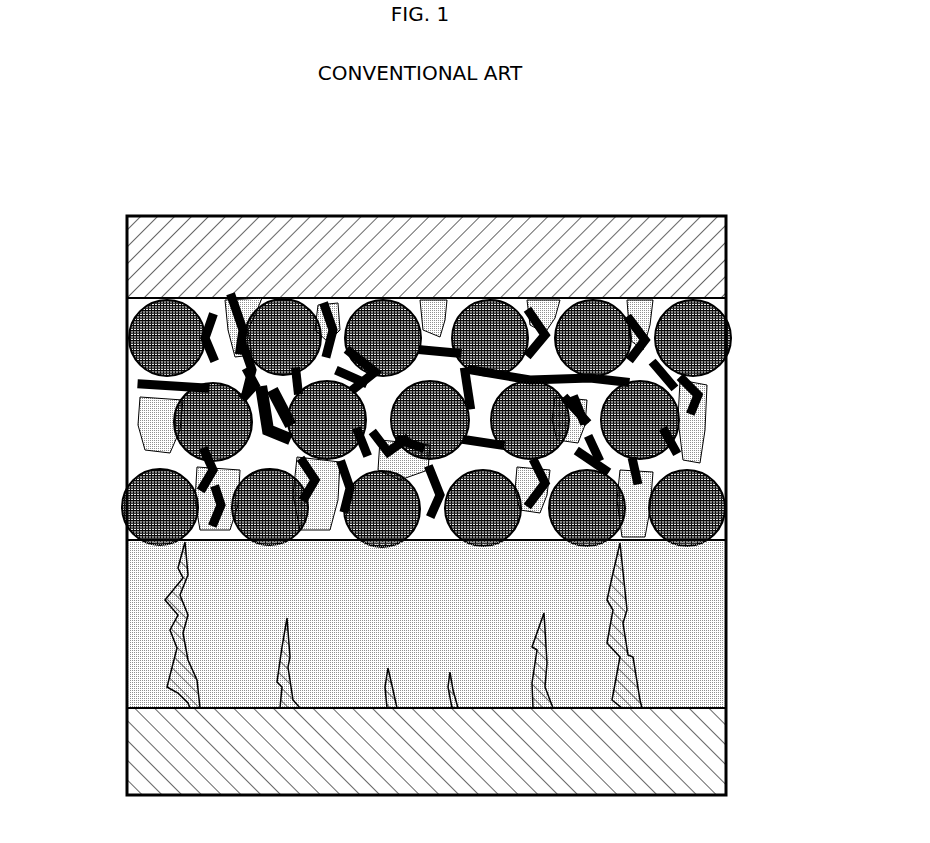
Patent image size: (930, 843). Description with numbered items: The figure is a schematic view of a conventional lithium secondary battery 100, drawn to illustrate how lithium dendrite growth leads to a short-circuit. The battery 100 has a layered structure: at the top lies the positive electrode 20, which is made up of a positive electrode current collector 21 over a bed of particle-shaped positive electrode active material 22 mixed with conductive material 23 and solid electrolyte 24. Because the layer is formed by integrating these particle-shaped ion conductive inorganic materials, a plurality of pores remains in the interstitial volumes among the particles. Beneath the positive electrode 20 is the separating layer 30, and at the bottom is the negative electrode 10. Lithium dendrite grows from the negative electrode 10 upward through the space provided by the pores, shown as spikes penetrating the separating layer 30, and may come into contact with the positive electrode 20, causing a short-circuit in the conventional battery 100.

The lithium secondary battery 100 is at (448, 191).
The negative electrode 10 is at (103, 712).
The positive electrode 20 is at (103, 538).
The positive electrode current collector 21 is at (712, 262).
The positive electrode active material 22 is at (717, 340).
The conductive material 23 is at (700, 396).
The solid electrolyte 24 is at (700, 436).
The separating layer 30 is at (103, 542).